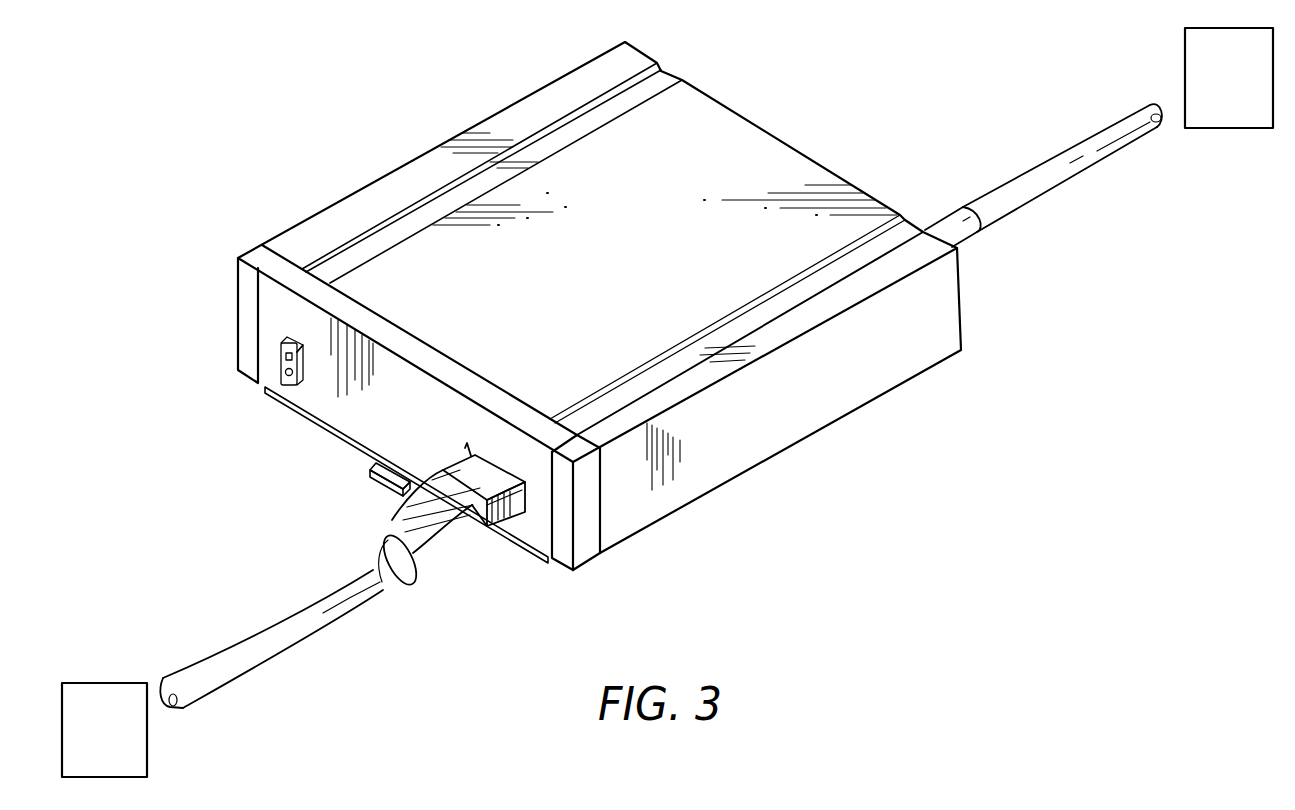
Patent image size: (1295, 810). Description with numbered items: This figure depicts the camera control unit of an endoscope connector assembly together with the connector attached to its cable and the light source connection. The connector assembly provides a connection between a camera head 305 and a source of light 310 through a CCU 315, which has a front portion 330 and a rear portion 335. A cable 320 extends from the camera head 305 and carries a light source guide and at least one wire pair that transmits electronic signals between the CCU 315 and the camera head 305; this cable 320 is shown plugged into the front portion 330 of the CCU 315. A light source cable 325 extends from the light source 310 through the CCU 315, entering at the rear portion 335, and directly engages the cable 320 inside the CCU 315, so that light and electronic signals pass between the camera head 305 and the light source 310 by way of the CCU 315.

The camera head 305 is at (125, 750).
The source of light 310 is at (1252, 94).
The CCU 315 is at (617, 270).
The cable 320 is at (295, 622).
The light source cable 325 is at (1067, 181).
The front portion 330 is at (358, 425).
The rear portion 335 is at (851, 181).